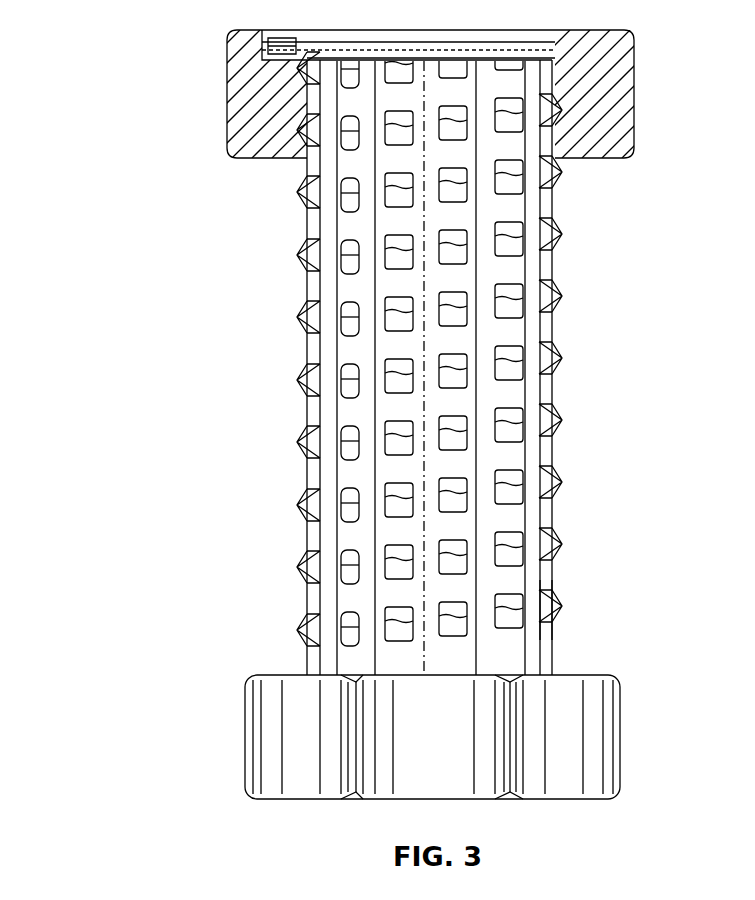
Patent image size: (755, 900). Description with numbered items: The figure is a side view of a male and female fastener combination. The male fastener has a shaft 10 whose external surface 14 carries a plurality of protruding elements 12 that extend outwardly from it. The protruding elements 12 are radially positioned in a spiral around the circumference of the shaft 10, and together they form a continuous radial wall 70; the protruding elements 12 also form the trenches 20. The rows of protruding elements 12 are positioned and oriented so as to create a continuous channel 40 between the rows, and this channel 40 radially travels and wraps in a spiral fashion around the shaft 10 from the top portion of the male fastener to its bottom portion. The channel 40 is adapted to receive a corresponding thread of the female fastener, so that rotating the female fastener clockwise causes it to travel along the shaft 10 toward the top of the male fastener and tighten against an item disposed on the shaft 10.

The shaft 10 is at (176, 279).
The protruding elements 12 is at (570, 360).
The external surface 14 is at (345, 413).
The trenches 20 is at (535, 606).
The continuous channel 40 is at (512, 514).
The continuous radial wall 70 is at (280, 620).